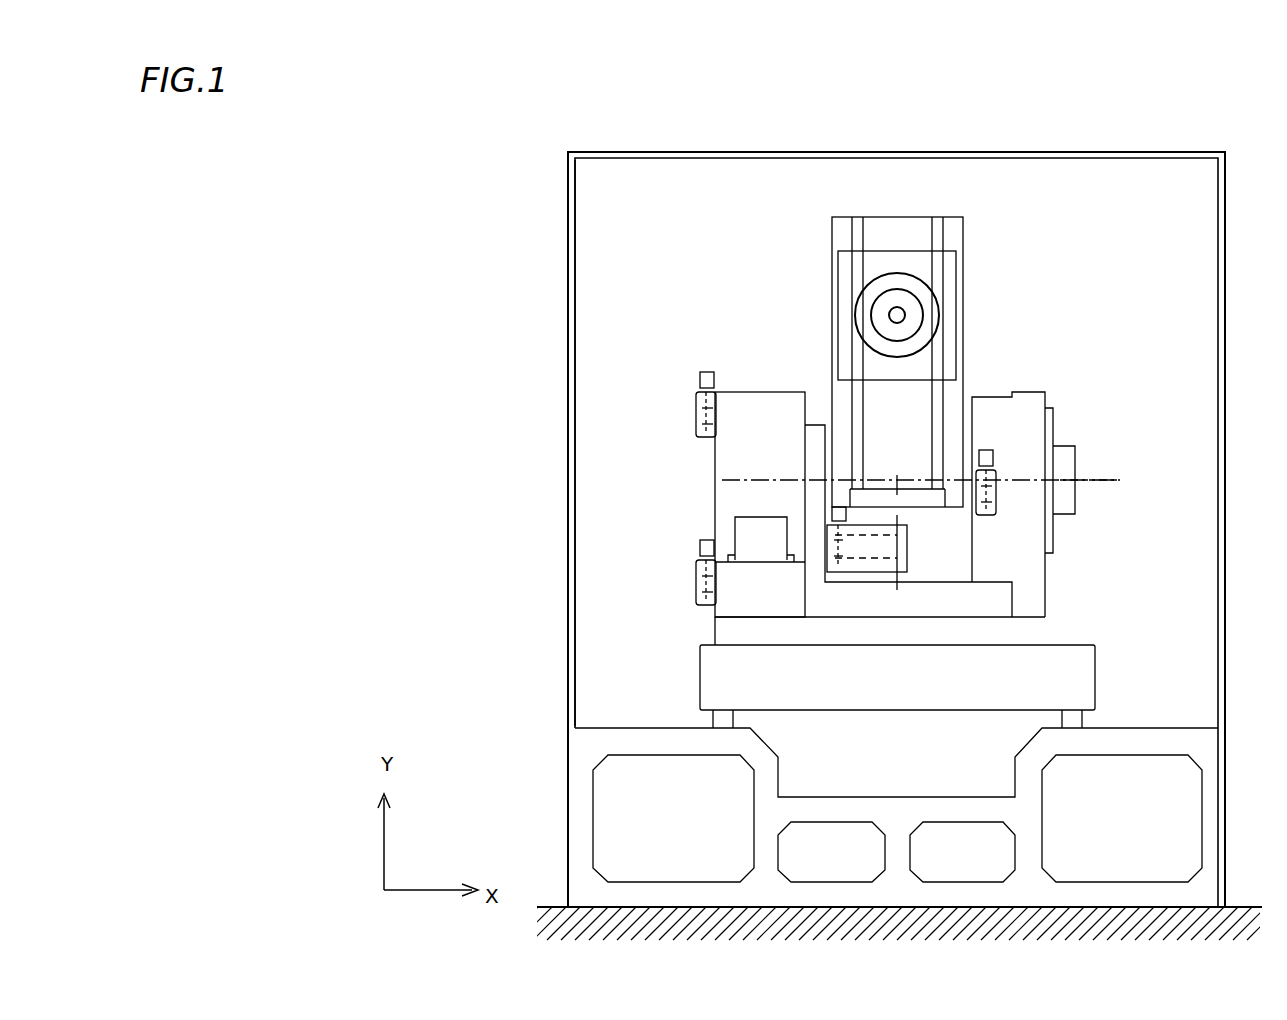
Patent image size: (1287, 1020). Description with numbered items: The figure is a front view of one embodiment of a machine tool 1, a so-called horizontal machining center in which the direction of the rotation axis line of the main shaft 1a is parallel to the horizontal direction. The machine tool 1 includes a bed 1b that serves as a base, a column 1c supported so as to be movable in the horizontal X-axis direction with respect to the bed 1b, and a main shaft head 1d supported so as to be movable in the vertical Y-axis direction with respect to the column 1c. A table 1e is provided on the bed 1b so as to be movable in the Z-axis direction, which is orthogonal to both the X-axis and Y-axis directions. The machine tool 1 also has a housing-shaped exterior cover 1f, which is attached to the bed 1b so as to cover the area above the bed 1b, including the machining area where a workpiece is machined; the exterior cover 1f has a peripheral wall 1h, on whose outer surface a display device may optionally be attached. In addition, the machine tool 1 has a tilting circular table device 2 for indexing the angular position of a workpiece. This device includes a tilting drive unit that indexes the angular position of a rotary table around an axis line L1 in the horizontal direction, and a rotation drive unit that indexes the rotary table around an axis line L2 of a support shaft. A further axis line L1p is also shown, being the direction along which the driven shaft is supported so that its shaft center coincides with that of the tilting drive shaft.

The machine tool 1 is at (490, 208).
The main shaft 1a is at (903, 311).
The bed 1b is at (569, 752).
The column 1c is at (832, 222).
The main shaft head 1d is at (871, 306).
The table 1e is at (700, 670).
The exterior cover 1f is at (568, 487).
The peripheral wall 1h is at (569, 393).
The tilting circular table device 2 is at (682, 404).
The axis line L1 is at (722, 480).
The axis line L1' L1p is at (1118, 483).
The axis line L2 is at (897, 577).